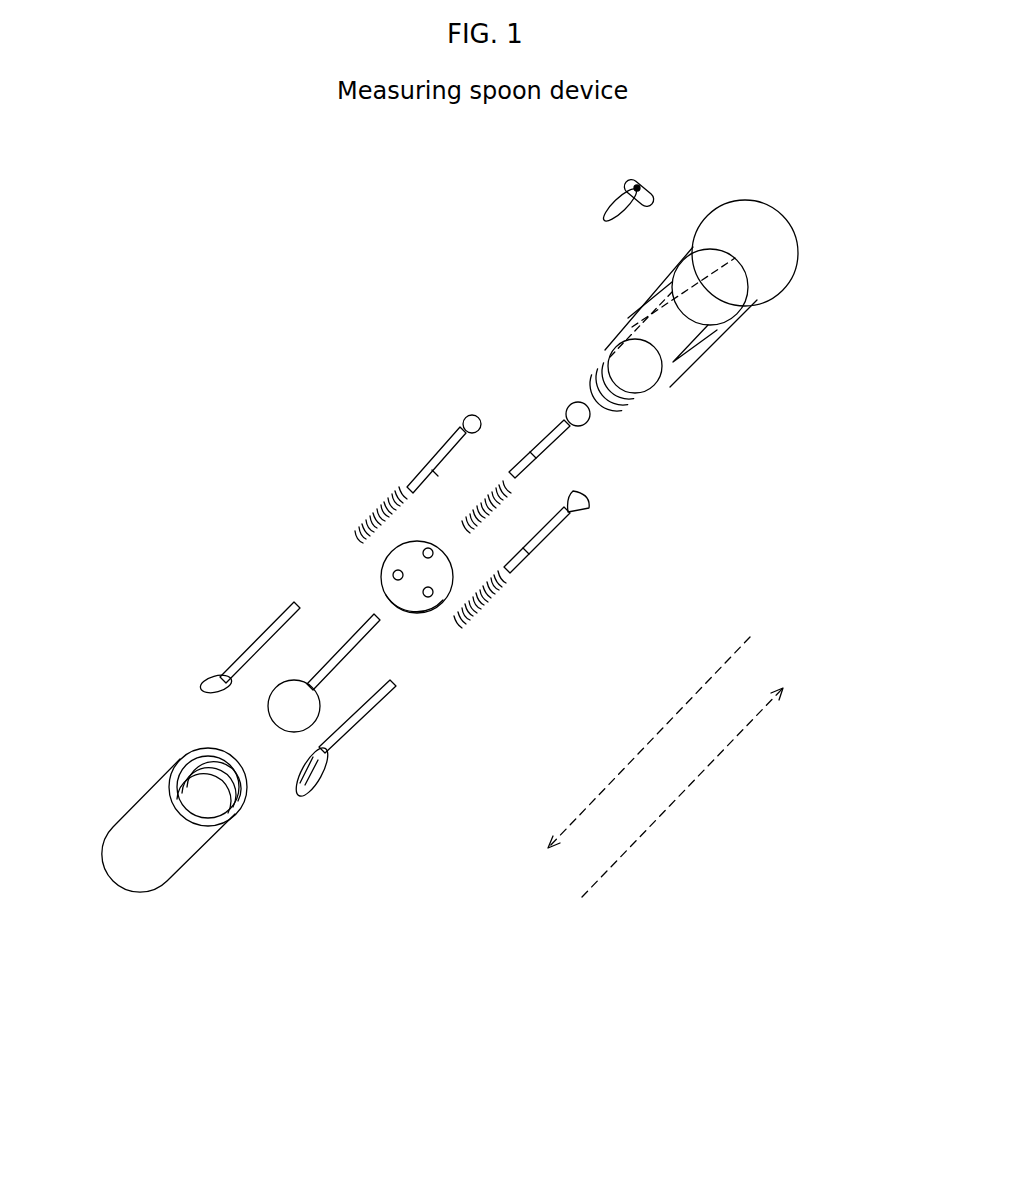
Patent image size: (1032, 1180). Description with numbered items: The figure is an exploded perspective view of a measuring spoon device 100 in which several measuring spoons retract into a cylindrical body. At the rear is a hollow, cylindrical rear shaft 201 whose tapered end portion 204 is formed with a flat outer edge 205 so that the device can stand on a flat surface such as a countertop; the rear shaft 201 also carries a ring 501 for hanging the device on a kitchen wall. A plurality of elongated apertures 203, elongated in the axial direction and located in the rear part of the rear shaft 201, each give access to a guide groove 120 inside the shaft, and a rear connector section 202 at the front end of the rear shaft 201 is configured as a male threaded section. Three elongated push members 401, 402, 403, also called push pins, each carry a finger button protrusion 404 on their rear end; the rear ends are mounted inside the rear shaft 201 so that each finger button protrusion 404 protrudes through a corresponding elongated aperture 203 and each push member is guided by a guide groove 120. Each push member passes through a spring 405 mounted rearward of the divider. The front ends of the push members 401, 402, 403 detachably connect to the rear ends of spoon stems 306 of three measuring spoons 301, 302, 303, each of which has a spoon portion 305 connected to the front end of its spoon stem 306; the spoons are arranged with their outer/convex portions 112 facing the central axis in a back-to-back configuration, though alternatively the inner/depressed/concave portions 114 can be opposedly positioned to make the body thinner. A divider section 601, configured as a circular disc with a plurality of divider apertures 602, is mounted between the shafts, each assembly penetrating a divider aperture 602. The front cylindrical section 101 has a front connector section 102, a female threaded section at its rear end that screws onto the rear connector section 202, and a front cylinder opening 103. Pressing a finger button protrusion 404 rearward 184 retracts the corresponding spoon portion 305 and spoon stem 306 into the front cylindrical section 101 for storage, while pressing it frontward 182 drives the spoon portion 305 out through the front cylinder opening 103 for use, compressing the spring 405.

The measuring spoon device 100 is at (225, 287).
The front cylindrical section 101 is at (157, 872).
The front connector section 102 is at (210, 760).
The front cylinder opening 103 is at (133, 897).
The outer/convex portion 112 is at (292, 768).
The inner/depressed/concave portion 114 is at (323, 782).
The guide groove 120 is at (662, 382).
The frontward direction 182 is at (612, 773).
The rearward direction 184 is at (730, 757).
The rear shaft 201 is at (630, 338).
The rear connector section 202 is at (606, 380).
The elongated aperture 203 is at (660, 288).
The tapered end portion 204 is at (752, 260).
The flat outer edge 205 is at (792, 218).
The measuring spoon 301 is at (227, 675).
The measuring spoon 302 is at (360, 637).
The measuring spoon 303 is at (338, 740).
The spoon portion 305 is at (302, 795).
The spoon stem 306 is at (387, 710).
The elongated push member 401 is at (437, 456).
The elongated push member 402 is at (540, 443).
The elongated push member 403 is at (540, 545).
The finger button protrusion 404 is at (467, 420).
The spring 405 is at (378, 515).
The ring 501 is at (622, 176).
The divider section 601 is at (412, 602).
The divider aperture 602 is at (423, 553).